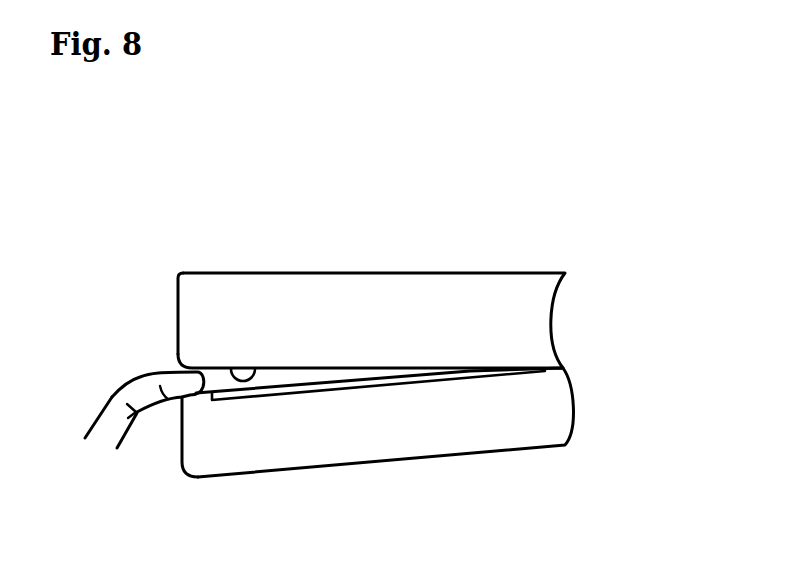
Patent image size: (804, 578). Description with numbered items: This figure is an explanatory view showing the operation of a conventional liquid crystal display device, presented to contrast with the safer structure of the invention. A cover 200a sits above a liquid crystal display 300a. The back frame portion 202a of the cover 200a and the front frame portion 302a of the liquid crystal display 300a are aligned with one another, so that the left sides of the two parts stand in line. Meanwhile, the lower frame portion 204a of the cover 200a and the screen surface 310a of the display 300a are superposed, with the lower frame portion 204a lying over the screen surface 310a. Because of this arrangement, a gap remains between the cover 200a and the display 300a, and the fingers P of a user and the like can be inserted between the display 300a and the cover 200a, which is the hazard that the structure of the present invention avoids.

The cover 200a is at (445, 293).
The back frame portion 202a is at (178, 320).
The lower frame portion 204a is at (257, 368).
The liquid crystal display 300a is at (415, 447).
The front frame portion 302a is at (180, 437).
The screen surface 310a is at (468, 371).
The fingers P is at (133, 377).